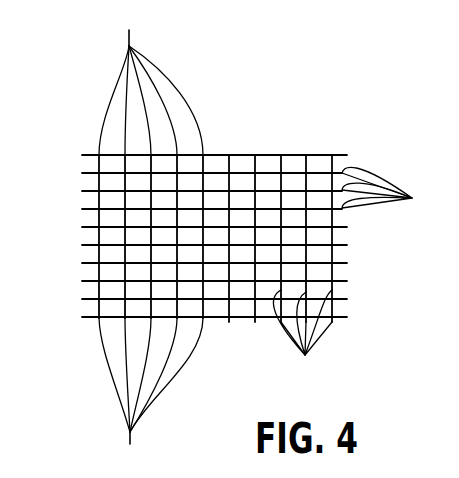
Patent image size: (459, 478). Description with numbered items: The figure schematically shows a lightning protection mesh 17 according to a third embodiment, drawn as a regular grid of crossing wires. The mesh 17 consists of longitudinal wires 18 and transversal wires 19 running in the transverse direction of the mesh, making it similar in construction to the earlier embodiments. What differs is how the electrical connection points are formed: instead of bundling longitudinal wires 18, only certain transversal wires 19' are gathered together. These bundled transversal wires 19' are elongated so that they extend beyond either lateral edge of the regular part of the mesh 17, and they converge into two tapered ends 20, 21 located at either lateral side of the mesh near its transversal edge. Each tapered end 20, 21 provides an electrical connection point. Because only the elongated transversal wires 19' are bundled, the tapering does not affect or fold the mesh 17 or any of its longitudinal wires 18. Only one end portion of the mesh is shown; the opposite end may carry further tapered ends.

The mesh 17 is at (273, 137).
The longitudinal wires 18 is at (392, 188).
The transversal wires 19 is at (302, 338).
The bundled transversal wires 19' is at (135, 239).
The tapered end 20 is at (115, 38).
The tapered end 21 is at (115, 431).